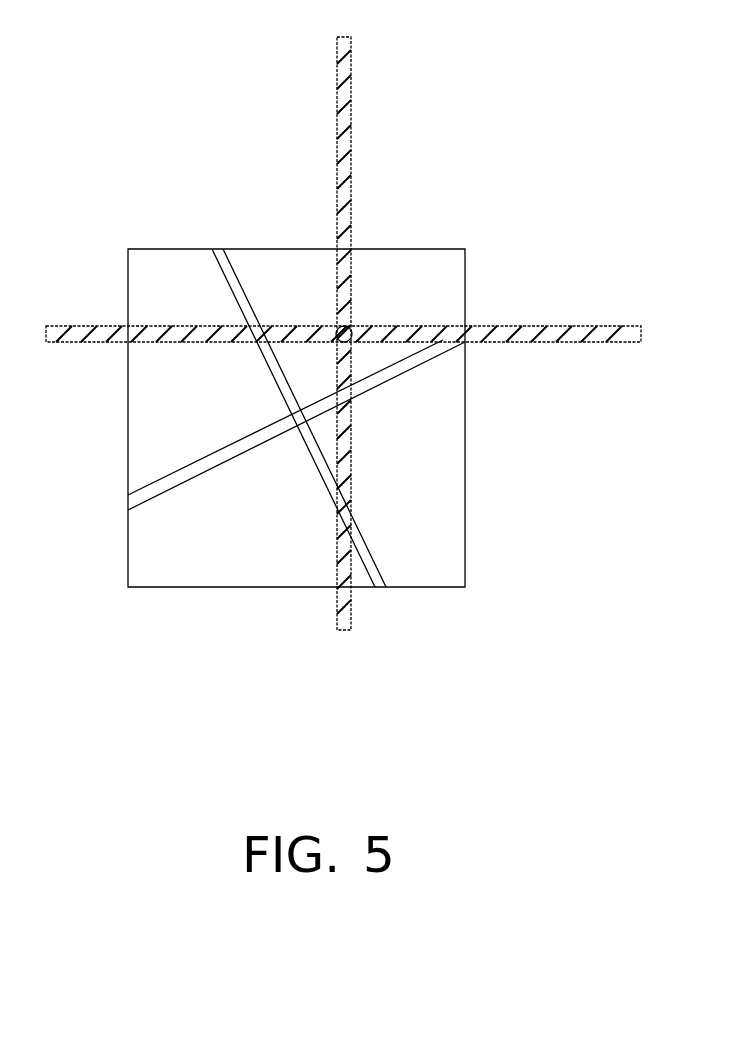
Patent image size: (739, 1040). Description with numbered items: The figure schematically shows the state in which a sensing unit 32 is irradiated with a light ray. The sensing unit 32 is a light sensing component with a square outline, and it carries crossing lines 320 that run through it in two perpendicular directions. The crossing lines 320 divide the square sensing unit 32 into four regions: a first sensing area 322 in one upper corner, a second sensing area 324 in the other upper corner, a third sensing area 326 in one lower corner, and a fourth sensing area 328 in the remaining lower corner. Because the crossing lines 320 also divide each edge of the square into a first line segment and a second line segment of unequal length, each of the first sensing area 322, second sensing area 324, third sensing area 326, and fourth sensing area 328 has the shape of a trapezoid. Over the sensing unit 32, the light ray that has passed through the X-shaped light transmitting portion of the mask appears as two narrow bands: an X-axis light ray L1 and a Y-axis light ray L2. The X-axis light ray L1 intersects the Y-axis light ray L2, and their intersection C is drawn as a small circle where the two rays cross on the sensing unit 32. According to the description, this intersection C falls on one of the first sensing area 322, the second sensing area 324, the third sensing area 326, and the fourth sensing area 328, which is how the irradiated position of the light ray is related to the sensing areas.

The sensing unit 32 is at (97, 270).
The crossing lines 320 is at (423, 366).
The first sensing area 322 is at (443, 272).
The second sensing area 324 is at (152, 437).
The third sensing area 326 is at (166, 573).
The fourth sensing area 328 is at (440, 551).
The X-axis light ray L1 is at (177, 322).
The Y-axis light ray L2 is at (340, 198).
The intersection C is at (348, 326).